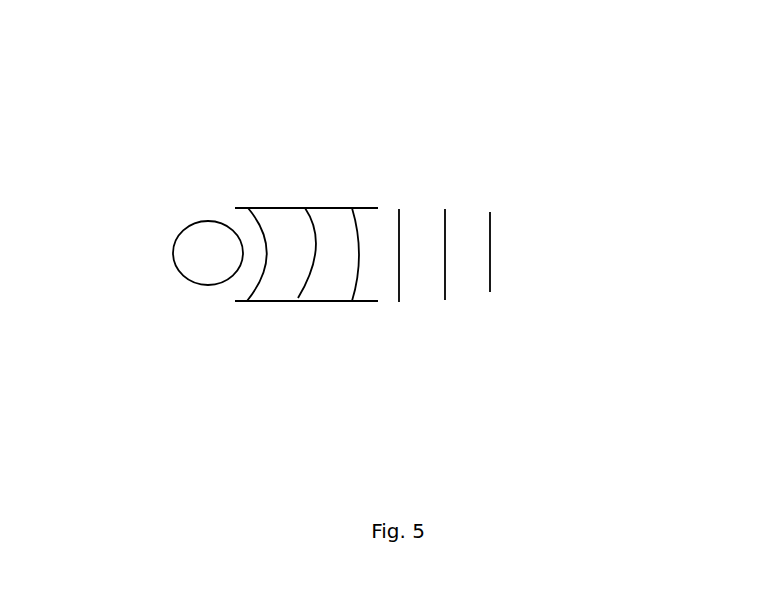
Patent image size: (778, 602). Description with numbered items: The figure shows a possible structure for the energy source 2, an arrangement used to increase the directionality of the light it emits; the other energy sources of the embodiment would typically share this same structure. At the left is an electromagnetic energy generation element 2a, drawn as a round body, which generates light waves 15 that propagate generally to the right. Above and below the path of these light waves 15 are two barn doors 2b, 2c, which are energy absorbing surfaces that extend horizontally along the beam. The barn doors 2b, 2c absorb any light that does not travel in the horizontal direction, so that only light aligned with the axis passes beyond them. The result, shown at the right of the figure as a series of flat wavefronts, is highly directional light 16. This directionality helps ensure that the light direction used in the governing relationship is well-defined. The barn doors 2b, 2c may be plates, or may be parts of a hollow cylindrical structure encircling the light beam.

The energy source 2 is at (132, 147).
The electromagnetic energy generation element 2a is at (207, 222).
The barn door 2b is at (353, 301).
The barn door 2c is at (362, 208).
The light waves 15 is at (286, 222).
The highly directional light 16 is at (520, 245).